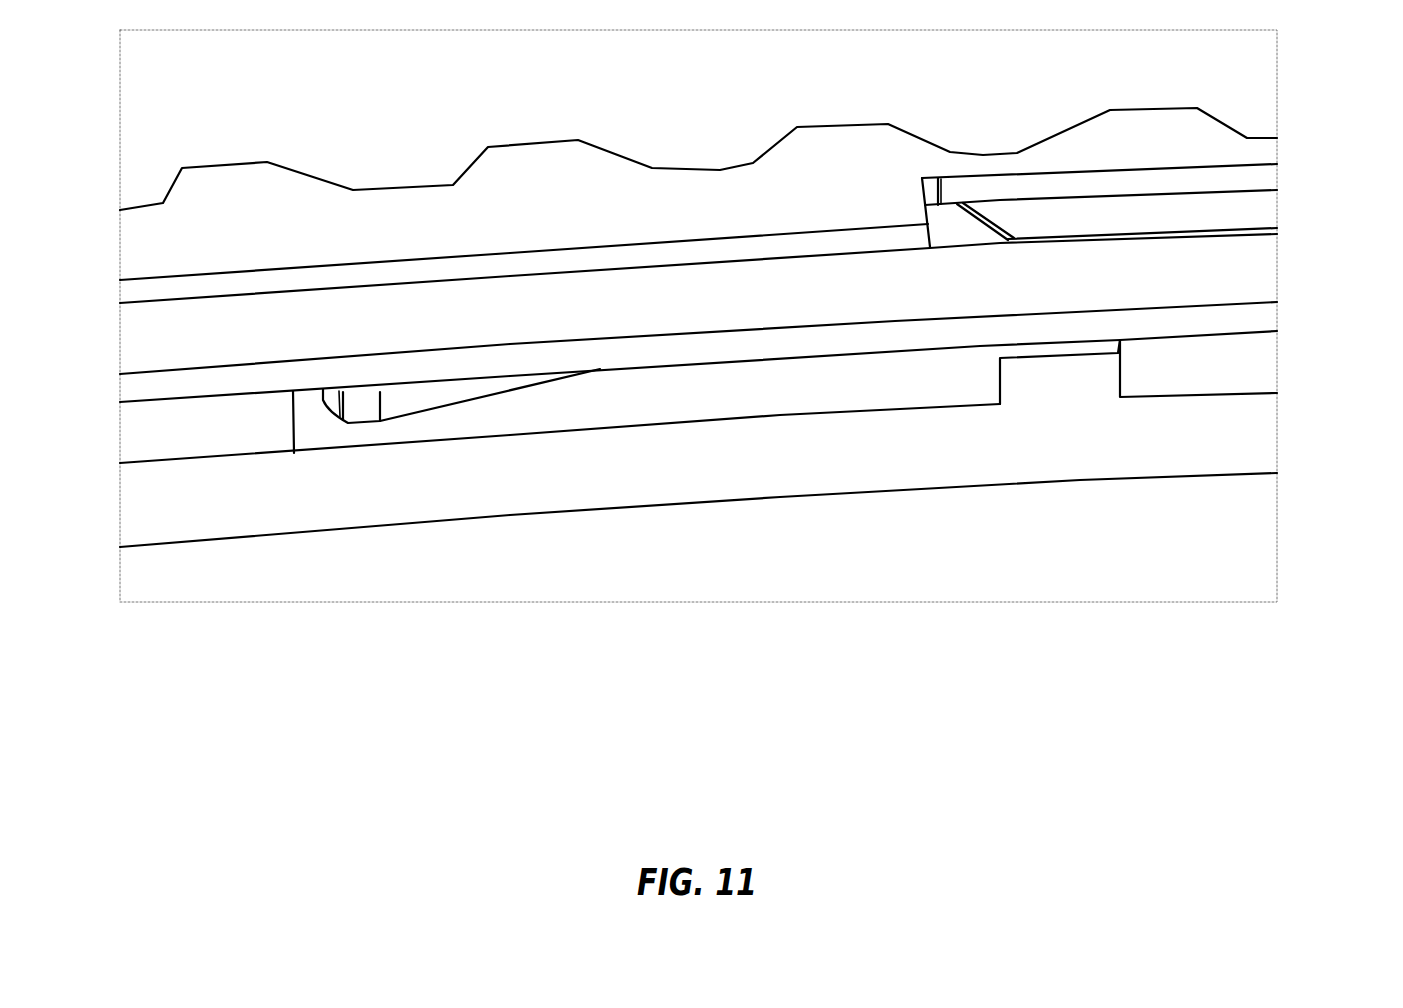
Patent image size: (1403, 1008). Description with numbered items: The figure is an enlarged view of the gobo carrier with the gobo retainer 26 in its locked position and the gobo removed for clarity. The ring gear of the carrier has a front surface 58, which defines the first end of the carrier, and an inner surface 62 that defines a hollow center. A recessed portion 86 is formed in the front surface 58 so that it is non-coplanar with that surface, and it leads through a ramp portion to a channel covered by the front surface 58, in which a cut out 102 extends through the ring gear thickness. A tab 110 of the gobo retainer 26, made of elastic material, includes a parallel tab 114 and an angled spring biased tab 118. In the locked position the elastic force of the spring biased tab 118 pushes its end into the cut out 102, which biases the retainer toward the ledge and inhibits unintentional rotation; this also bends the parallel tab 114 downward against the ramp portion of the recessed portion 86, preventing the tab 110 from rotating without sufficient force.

The front surface 58 is at (662, 147).
The inner surface 62 is at (656, 247).
The gobo retainer 26 is at (662, 333).
The cut out 102 is at (698, 450).
The spring biased tab 118 is at (433, 278).
The tab 110 is at (1099, 148).
The parallel tab 114 is at (1027, 223).
The recessed portion 86 is at (1320, 212).